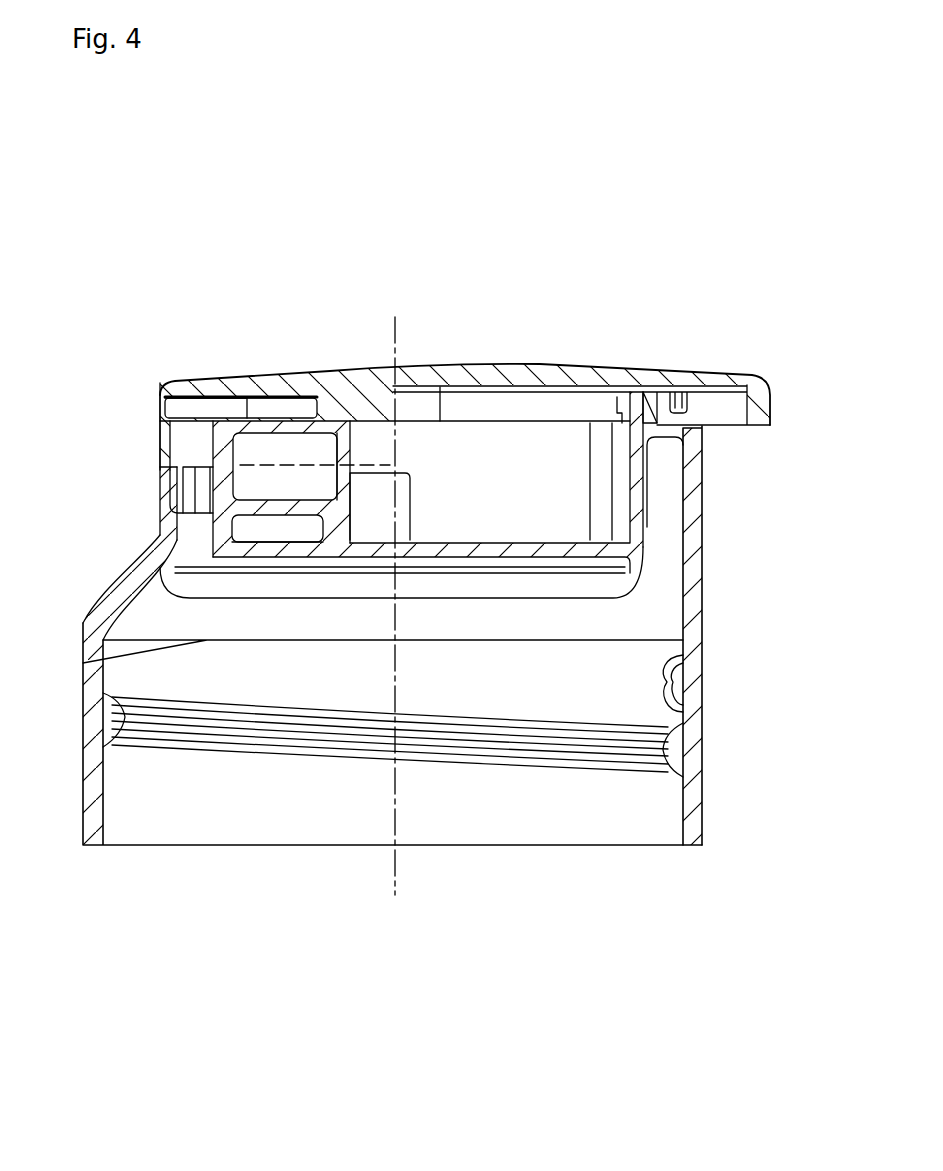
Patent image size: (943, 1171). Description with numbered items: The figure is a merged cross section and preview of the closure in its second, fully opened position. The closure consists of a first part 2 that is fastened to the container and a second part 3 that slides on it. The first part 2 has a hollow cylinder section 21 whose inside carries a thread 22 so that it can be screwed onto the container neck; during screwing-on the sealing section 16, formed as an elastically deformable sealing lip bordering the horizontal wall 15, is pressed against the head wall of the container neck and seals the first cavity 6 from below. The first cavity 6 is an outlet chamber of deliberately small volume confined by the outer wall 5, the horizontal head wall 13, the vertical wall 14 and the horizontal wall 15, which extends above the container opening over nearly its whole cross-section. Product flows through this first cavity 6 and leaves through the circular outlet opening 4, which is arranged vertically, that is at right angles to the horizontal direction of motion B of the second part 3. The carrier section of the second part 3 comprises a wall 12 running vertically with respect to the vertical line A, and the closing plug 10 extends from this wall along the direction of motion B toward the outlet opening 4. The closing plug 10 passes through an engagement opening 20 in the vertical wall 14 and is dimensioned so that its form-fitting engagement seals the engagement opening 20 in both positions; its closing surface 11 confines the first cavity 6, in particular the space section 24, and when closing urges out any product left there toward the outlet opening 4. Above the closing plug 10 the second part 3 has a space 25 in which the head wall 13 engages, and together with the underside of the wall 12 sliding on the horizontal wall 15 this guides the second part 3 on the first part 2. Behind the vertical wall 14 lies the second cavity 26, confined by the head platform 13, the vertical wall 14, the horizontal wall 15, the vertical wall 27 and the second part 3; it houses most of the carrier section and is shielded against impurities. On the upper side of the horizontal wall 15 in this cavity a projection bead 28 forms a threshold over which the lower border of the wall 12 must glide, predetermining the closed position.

The first part 2 is at (703, 498).
The second part 3 is at (760, 379).
The outlet opening 4 is at (165, 495).
The outer wall 5 is at (165, 535).
The first cavity 6 is at (199, 514).
The closing plug 10 is at (289, 414).
The closing surface 11 is at (216, 450).
The wall 12 is at (350, 530).
The head wall 13 is at (197, 407).
The vertical wall 14 is at (180, 553).
The horizontal wall 15 is at (248, 540).
The sealing section 16 is at (625, 588).
The engagement opening 20 is at (232, 497).
The hollow cylinder section 21 is at (82, 717).
The thread 22 is at (687, 708).
The space section 24 is at (199, 455).
The space 25 is at (278, 468).
The second cavity 26 is at (546, 489).
The vertical wall 27 is at (640, 480).
The projection bead 28 is at (365, 624).
The vertical line A is at (395, 320).
The horizontal direction of motion B is at (277, 440).